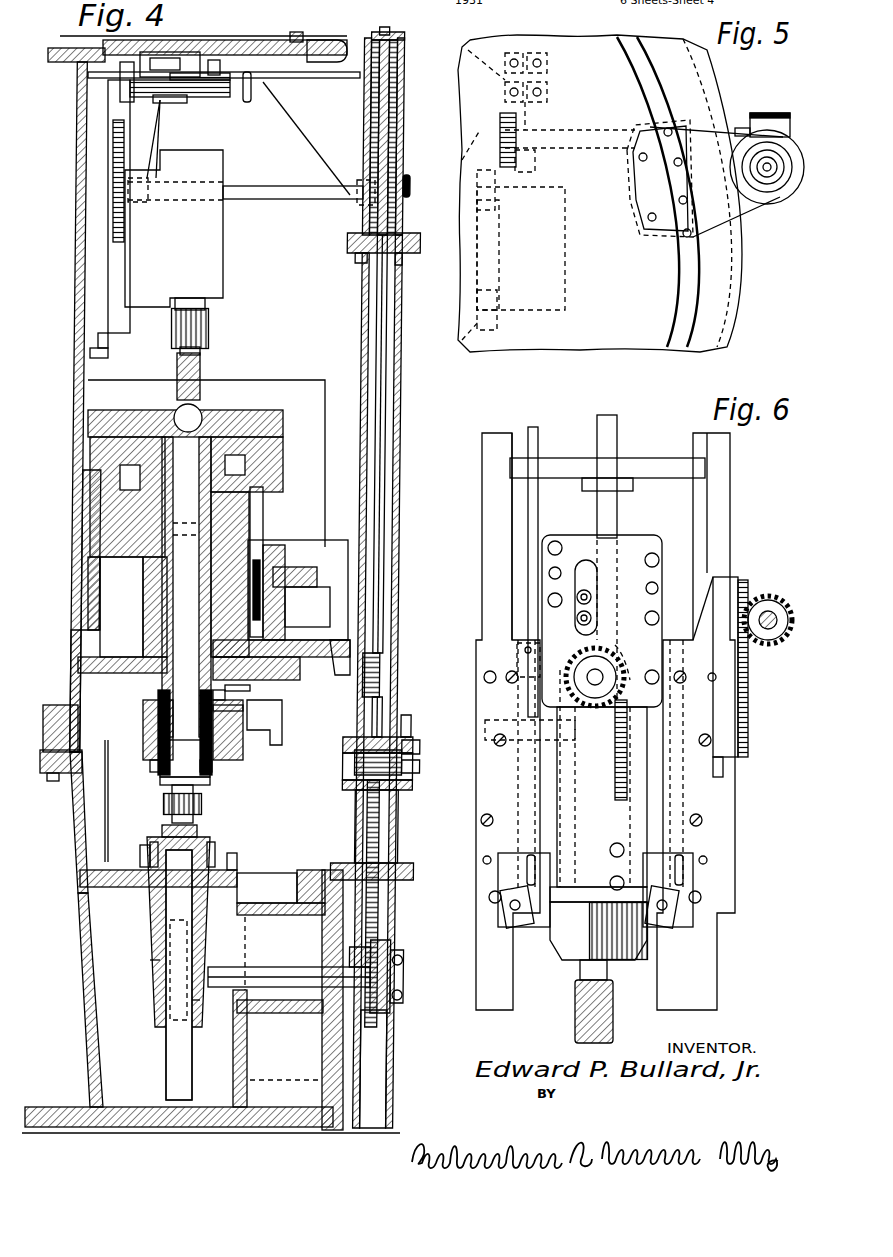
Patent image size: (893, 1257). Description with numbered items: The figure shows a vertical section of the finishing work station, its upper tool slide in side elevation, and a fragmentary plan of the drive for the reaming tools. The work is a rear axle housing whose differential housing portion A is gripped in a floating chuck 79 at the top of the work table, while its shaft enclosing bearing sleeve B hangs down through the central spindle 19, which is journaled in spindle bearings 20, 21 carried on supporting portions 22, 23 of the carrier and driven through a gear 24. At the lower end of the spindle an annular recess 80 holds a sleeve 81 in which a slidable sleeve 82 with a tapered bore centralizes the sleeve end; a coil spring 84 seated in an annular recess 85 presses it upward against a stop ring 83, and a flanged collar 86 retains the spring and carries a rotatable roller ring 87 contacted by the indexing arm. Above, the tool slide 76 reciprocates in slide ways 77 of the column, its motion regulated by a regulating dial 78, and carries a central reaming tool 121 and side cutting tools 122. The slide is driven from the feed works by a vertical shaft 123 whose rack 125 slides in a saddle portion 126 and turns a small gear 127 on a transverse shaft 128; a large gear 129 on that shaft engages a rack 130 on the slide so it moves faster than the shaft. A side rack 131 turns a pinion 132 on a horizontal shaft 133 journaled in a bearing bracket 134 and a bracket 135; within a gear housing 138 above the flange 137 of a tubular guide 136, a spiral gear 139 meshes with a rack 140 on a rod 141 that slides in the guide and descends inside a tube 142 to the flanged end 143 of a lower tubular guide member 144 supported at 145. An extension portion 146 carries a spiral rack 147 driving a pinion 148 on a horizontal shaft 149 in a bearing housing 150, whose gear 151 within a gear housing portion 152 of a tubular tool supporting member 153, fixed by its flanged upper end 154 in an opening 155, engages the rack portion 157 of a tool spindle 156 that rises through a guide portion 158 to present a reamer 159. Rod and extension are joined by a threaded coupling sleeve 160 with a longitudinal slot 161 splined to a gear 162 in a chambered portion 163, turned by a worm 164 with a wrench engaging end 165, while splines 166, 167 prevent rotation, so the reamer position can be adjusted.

In FIG. 4, the central spindle 19 is at (143, 616).
In FIG. 4, the spindle bearing 20 is at (258, 551).
In FIG. 4, the spindle bearing 21 is at (214, 783).
In FIG. 4, the supporting portion 22 is at (289, 559).
In FIG. 4, the supporting portion 23 is at (249, 735).
In FIG. 4, the gear 24 is at (122, 674).
In FIG. 4, the tool slide 76 is at (205, 277).
In FIG. 5, the tool slide 76 is at (545, 255).
In FIG. 6, the tool slide 76 is at (612, 805).
In FIG. 4, the slide ways 77 is at (100, 312).
In FIG. 5, the slide ways 77 is at (497, 192).
In FIG. 6, the slide ways 77 is at (712, 932).
In FIG. 4, the regulating dial 78 is at (205, 97).
In FIG. 4, the chuck 79 is at (256, 453).
In FIG. 4, the annular recess 80 is at (214, 697).
In FIG. 4, the sleeve 81 is at (214, 708).
In FIG. 4, the slidable sleeve 82 is at (150, 746).
In FIG. 4, the stop ring 83 is at (258, 691).
In FIG. 4, the coil spring 84 is at (212, 750).
In FIG. 4, the annular recess 85 is at (160, 771).
In FIG. 4, the flanged collar 86 is at (202, 772).
In FIG. 4, the roller ring 87 is at (210, 766).
In FIG. 4, the central reaming tool 121 is at (200, 366).
In FIG. 6, the central reaming tool 121 is at (585, 1005).
In FIG. 6, the side cutting tools 122 is at (525, 925).
In FIG. 6, the vertical shaft 123 is at (618, 428).
In FIG. 6, the rack 125 is at (655, 630).
In FIG. 6, the saddle portion 126 is at (628, 540).
In FIG. 6, the small gear 127 is at (585, 668).
In FIG. 6, the transverse shaft 128 is at (585, 682).
In FIG. 6, the large gear 129 is at (555, 672).
In FIG. 6, the rack 130 is at (630, 675).
In FIG. 4, the rack 131 is at (125, 250).
In FIG. 5, the rack 131 is at (518, 176).
In FIG. 6, the rack 131 is at (748, 695).
In FIG. 4, the pinion 132 is at (130, 201).
In FIG. 5, the pinion 132 is at (542, 162).
In FIG. 6, the pinion 132 is at (770, 610).
In FIG. 4, the horizontal shaft 133 is at (256, 201).
In FIG. 5, the horizontal shaft 133 is at (592, 138).
In FIG. 6, the horizontal shaft 133 is at (762, 645).
In FIG. 4, the bearing bracket 134 is at (150, 128).
In FIG. 5, the bearing bracket 134 is at (548, 112).
In FIG. 4, the bracket 135 is at (312, 128).
In FIG. 5, the bracket 135 is at (748, 205).
In FIG. 4, the tubular guide 136 is at (405, 130).
In FIG. 4, the flange 137 is at (410, 234).
In FIG. 5, the flange 137 is at (770, 200).
In FIG. 5, the gear housing 138 is at (755, 113).
In FIG. 4, the gear 139 is at (411, 182).
In FIG. 5, the gear 139 is at (775, 112).
In FIG. 4, the rack 140 is at (405, 153).
In FIG. 4, the rod 141 is at (382, 328).
In FIG. 4, the tube 142 is at (399, 417).
In FIG. 4, the flanged end 143 is at (406, 735).
In FIG. 4, the lower tubular guide member 144 is at (396, 827).
In FIG. 4, the support 145 is at (326, 941).
In FIG. 4, the extension portion 146 is at (376, 851).
In FIG. 4, the spiral rack 147 is at (392, 956).
In FIG. 4, the pinion 148 is at (404, 978).
In FIG. 4, the horizontal shaft 149 is at (270, 975).
In FIG. 4, the bearing housing 150 is at (405, 993).
In FIG. 4, the gear 151 is at (195, 1026).
In FIG. 4, the gear housing portion 152 is at (148, 966).
In FIG. 4, the tubular tool supporting member 153 is at (147, 921).
In FIG. 4, the flanged upper end 154 is at (267, 874).
In FIG. 4, the opening 155 is at (143, 881).
In FIG. 4, the tool spindle 156 is at (170, 1061).
In FIG. 4, the rack portion 157 is at (165, 1026).
In FIG. 4, the guide portion 158 is at (165, 838).
In FIG. 4, the reamer 159 is at (194, 815).
In FIG. 4, the coupling sleeve 160 is at (378, 700).
In FIG. 4, the longitudinal slot 161 is at (380, 716).
In FIG. 4, the gear 162 is at (392, 786).
In FIG. 4, the chambered portion 163 is at (406, 757).
In FIG. 4, the worm 164 is at (412, 744).
In FIG. 4, the wrench engaging end 165 is at (414, 768).
In FIG. 4, the spline 166 is at (401, 262).
In FIG. 4, the spline 167 is at (378, 940).
In FIG. 4, the differential housing portion A is at (215, 412).
In FIG. 4, the shaft enclosing bearing sleeve B is at (196, 618).